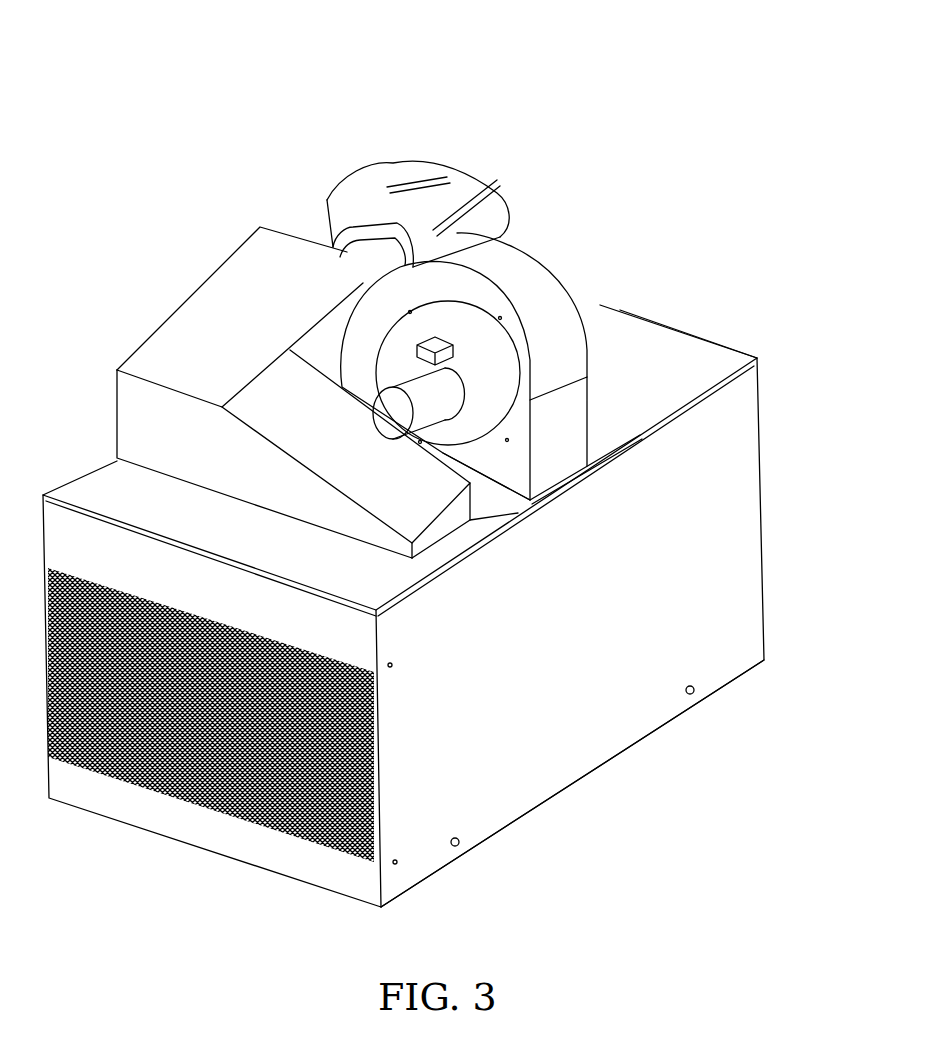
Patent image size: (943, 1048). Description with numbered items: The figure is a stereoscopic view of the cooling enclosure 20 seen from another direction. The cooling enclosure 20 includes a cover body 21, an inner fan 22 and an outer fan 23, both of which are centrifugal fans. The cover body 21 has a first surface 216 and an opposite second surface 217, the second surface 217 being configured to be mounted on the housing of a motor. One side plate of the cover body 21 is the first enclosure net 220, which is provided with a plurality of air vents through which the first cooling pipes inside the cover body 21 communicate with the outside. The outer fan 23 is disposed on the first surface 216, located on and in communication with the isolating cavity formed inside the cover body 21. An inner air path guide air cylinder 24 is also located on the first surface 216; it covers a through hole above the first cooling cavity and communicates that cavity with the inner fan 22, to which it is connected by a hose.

The cooling enclosure 20 is at (355, 98).
The cover body 21 is at (732, 400).
The first surface 216 is at (628, 340).
The second surface 217 is at (658, 728).
The first enclosure net 220 is at (220, 827).
The inner fan 22 is at (453, 173).
The outer fan 23 is at (533, 263).
The inner air path guide air cylinder 24 is at (243, 297).